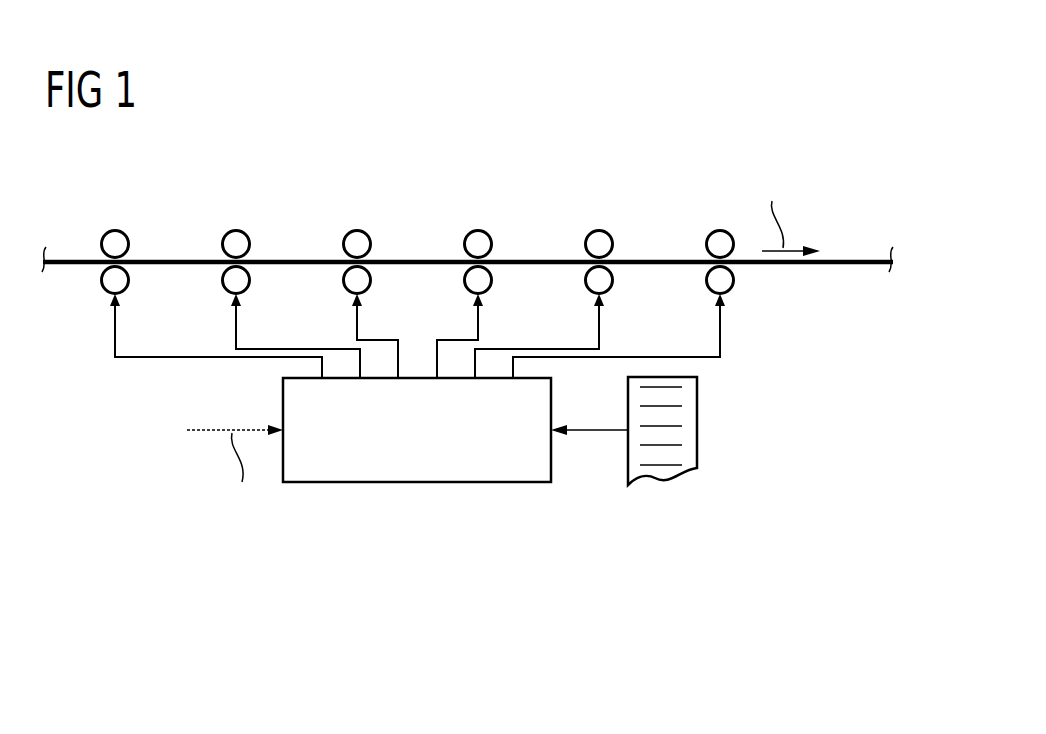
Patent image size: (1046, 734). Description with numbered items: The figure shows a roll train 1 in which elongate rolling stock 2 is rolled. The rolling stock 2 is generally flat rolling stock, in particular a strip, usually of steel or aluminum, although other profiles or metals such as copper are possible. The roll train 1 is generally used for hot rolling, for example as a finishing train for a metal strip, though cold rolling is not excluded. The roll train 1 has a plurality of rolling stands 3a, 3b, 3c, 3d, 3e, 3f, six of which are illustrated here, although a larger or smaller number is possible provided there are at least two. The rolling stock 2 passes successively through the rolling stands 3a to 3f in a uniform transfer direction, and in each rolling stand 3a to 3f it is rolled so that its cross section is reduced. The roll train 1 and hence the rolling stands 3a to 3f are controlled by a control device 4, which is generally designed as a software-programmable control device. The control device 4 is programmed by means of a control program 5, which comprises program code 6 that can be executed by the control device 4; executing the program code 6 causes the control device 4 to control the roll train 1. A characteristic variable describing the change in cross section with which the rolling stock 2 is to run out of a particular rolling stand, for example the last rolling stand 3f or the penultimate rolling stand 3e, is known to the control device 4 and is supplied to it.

The roll train 1 is at (800, 193).
The rolling stock 2 is at (869, 256).
The rolling stand 3a is at (115, 228).
The rolling stand 3b is at (236, 228).
The rolling stand 3c is at (357, 228).
The rolling stand 3d is at (478, 228).
The rolling stand 3e is at (599, 228).
The rolling stand 3f is at (721, 228).
The control device 4 is at (435, 484).
The control program 5 is at (660, 478).
The program code 6 is at (680, 421).